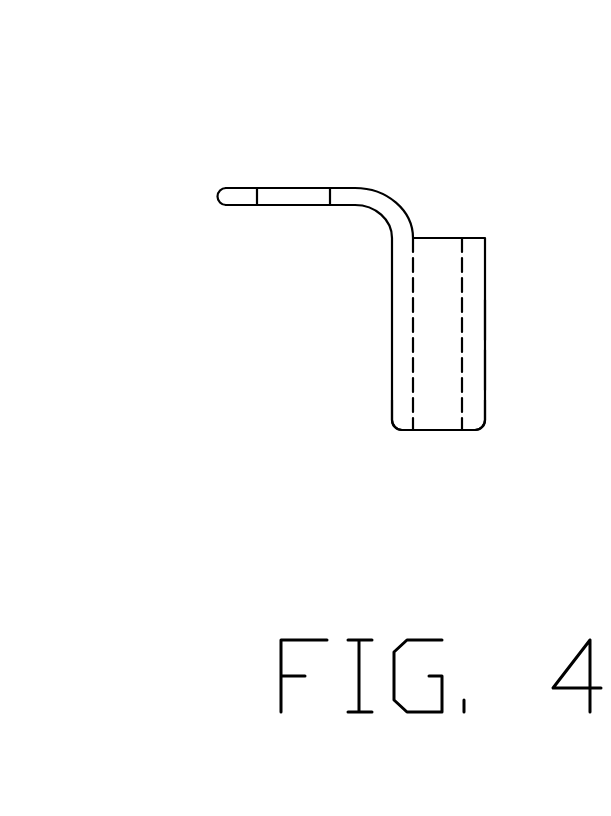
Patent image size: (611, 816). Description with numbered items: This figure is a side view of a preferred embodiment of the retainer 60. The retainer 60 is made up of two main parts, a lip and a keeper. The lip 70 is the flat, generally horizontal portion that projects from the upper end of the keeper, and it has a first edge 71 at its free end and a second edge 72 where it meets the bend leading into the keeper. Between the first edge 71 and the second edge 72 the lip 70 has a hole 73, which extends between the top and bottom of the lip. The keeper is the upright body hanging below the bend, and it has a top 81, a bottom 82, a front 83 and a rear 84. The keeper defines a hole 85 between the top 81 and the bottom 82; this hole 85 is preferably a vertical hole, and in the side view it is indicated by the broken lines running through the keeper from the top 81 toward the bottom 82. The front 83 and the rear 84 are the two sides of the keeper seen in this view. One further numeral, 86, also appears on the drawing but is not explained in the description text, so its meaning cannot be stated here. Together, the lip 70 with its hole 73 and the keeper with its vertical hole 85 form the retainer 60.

The retainer 60 is at (351, 317).
The lip 70 is at (238, 187).
The first edge 71 is at (215, 197).
The second edge 72 is at (378, 196).
The hole 73 is at (258, 196).
The top 81 is at (477, 238).
The bottom 82 is at (532, 477).
The front 83 is at (570, 273).
The rear 84 is at (390, 403).
The hole 85 is at (462, 518).
The side edge of retaining body 86 is at (565, 362).